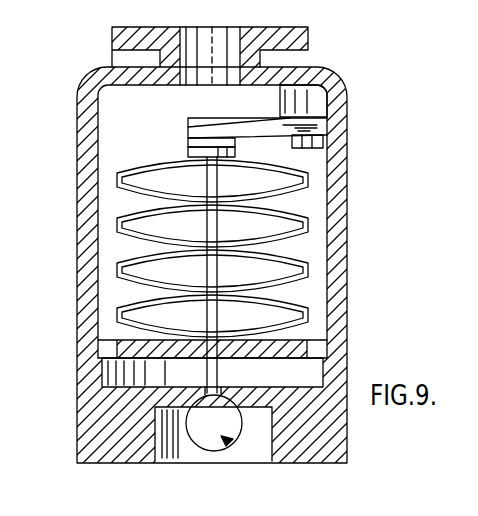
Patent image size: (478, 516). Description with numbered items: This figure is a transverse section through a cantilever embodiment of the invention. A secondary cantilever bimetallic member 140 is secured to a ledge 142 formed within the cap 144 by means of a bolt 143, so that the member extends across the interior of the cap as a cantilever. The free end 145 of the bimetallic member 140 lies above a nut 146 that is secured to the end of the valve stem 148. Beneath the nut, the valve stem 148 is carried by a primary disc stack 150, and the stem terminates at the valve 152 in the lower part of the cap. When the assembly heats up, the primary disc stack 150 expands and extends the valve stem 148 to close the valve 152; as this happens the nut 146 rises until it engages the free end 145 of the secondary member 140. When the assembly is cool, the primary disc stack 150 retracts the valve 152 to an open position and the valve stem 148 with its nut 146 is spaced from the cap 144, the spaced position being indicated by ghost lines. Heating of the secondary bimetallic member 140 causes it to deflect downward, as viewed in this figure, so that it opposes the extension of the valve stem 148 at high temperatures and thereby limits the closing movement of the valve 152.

The secondary cantilever bimetallic member 140 is at (247, 118).
The ledge 142 is at (310, 103).
The bolt 143 is at (318, 142).
The cap 144 is at (348, 216).
The free end 145 is at (188, 136).
The nut 146 is at (188, 152).
The valve stem 148 is at (237, 256).
The primary disc stack 150 is at (122, 312).
The valve 152 is at (190, 445).